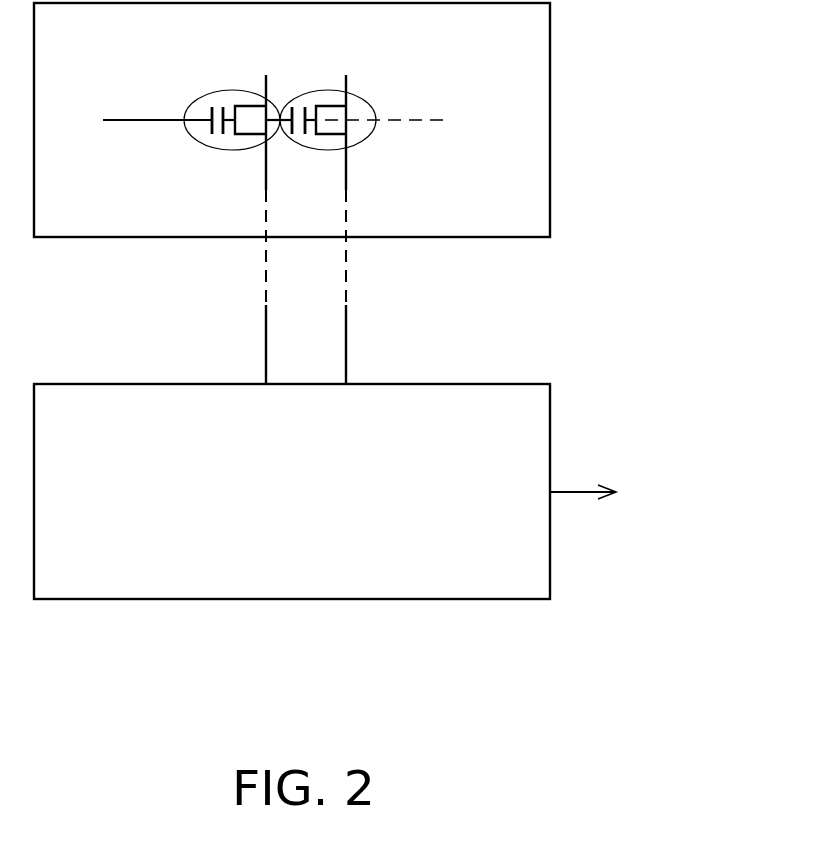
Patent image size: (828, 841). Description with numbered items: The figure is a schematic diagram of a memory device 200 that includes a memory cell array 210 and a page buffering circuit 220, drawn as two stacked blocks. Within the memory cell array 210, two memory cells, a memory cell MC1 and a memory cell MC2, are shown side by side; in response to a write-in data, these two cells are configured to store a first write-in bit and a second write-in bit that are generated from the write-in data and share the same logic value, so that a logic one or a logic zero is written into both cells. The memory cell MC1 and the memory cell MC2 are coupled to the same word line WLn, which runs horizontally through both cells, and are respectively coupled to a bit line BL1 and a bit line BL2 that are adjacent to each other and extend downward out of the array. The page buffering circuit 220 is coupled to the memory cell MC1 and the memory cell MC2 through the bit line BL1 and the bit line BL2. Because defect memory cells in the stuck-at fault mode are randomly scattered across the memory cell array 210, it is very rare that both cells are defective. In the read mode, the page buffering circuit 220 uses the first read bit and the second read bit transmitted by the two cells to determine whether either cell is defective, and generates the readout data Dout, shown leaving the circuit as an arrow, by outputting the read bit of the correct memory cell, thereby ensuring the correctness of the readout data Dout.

The memory device 200 is at (371, 331).
The memory cell array 210 is at (550, 115).
The page buffering circuit 220 is at (550, 418).
The memory cell MC1 is at (248, 90).
The memory cell MC2 is at (328, 90).
The word line WLn is at (146, 99).
The bit line BL1 is at (265, 346).
The bit line BL2 is at (347, 346).
The readout data Dout is at (616, 493).